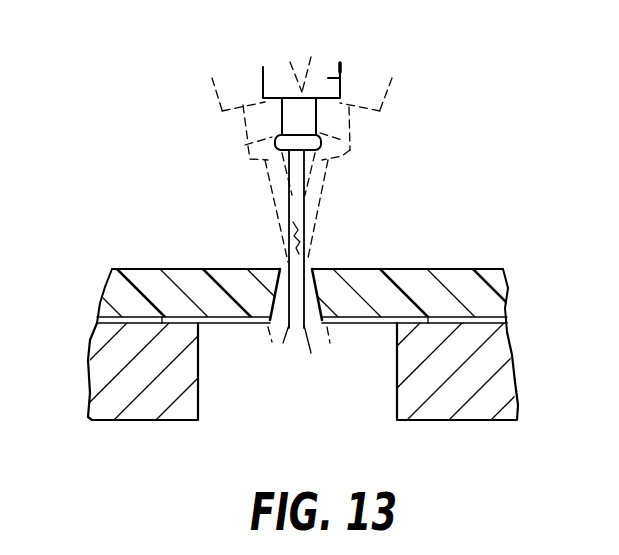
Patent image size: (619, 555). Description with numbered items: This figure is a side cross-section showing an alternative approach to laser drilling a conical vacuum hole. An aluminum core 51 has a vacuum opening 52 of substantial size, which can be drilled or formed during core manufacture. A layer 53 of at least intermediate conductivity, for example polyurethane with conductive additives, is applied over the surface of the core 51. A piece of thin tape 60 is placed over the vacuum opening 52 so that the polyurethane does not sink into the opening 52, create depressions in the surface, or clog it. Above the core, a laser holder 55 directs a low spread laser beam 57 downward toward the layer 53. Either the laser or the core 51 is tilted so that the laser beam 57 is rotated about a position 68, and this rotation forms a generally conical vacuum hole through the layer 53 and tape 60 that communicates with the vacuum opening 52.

The aluminum core 51 is at (504, 386).
The vacuum opening 52 is at (365, 397).
The layer 53 is at (493, 307).
The nozzle holder bracket 55 is at (341, 79).
The low spread laser beam 57 is at (300, 176).
The tape 60 is at (347, 323).
The position 68 is at (296, 268).